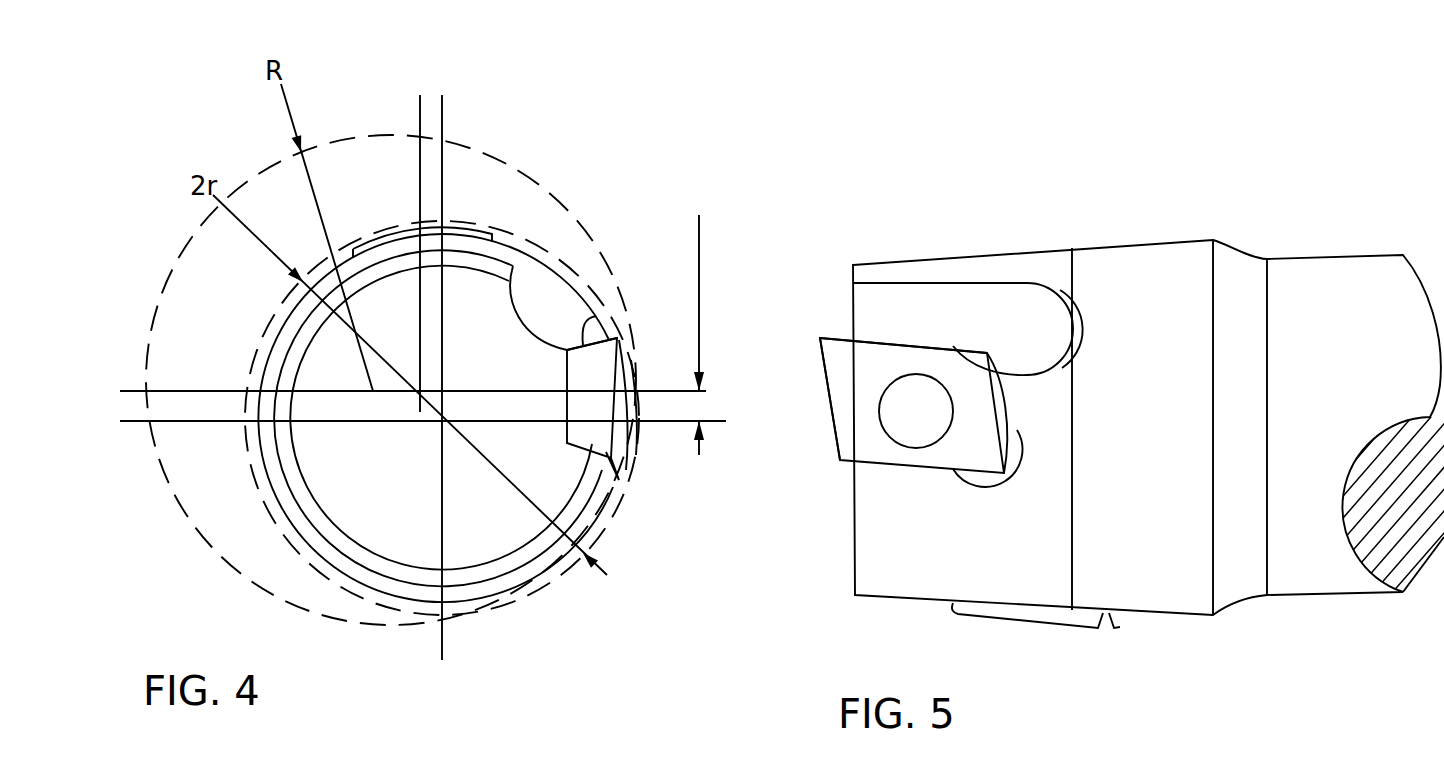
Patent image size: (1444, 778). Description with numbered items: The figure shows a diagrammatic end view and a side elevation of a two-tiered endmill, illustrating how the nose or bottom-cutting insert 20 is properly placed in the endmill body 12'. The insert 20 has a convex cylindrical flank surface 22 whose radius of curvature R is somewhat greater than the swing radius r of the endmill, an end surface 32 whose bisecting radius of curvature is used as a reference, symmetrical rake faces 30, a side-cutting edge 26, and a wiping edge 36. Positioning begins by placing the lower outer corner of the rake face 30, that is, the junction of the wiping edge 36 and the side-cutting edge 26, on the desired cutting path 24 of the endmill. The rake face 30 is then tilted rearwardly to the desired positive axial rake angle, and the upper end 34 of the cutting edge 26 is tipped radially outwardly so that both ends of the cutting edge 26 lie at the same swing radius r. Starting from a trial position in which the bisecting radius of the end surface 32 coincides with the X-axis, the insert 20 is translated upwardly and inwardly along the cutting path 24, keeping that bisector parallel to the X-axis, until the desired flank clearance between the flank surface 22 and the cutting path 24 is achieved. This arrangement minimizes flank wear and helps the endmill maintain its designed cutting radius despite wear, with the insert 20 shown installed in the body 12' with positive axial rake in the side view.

In FIG. 4, the endmill body 12' is at (435, 418).
In FIG. 5, the endmill body 12' is at (1148, 440).
In FIG. 4, the nose or bottom-cutting insert 20 is at (380, 216).
In FIG. 5, the nose or bottom-cutting insert 20 is at (802, 385).
In FIG. 4, the flank surface 22 is at (619, 451).
In FIG. 5, the flank surface 22 is at (979, 468).
In FIG. 4, the cutting path 24 is at (519, 247).
In FIG. 4, the cutting edge 26 is at (623, 345).
In FIG. 5, the cutting edge 26 is at (897, 345).
In FIG. 5, the rake face 30 is at (953, 349).
In FIG. 4, the end surface 32 is at (607, 378).
In FIG. 5, the upper end of the cutting edge 34 is at (1050, 362).
In FIG. 4, the wiping edge 36 is at (606, 332).
In FIG. 5, the wiping edge 36 is at (821, 338).